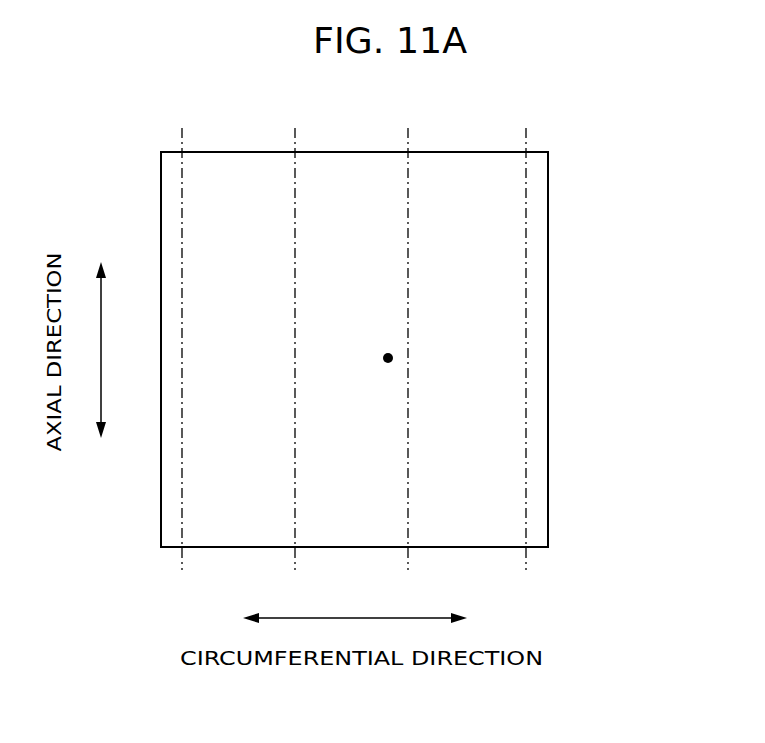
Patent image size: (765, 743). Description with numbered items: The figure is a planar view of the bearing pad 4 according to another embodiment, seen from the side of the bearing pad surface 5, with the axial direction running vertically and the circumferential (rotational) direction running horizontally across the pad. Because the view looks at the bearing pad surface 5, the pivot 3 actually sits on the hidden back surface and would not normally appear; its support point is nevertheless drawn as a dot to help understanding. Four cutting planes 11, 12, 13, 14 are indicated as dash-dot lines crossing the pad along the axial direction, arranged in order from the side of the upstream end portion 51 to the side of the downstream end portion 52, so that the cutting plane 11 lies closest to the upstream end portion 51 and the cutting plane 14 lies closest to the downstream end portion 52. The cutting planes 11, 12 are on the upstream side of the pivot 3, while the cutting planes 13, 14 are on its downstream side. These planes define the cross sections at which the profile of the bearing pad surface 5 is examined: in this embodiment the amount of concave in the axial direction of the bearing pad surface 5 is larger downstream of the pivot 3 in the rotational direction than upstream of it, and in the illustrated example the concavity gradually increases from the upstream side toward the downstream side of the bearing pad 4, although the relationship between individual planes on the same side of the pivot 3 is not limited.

The pivot 3 is at (393, 359).
The bearing pad 4 is at (613, 194).
The bearing pad surface 5 is at (510, 423).
The cutting plane 11 is at (182, 333).
The cutting plane 12 is at (295, 333).
The cutting plane 13 is at (407, 333).
The cutting plane 14 is at (526, 333).
The upstream end portion 51 is at (161, 480).
The downstream end portion 52 is at (548, 462).